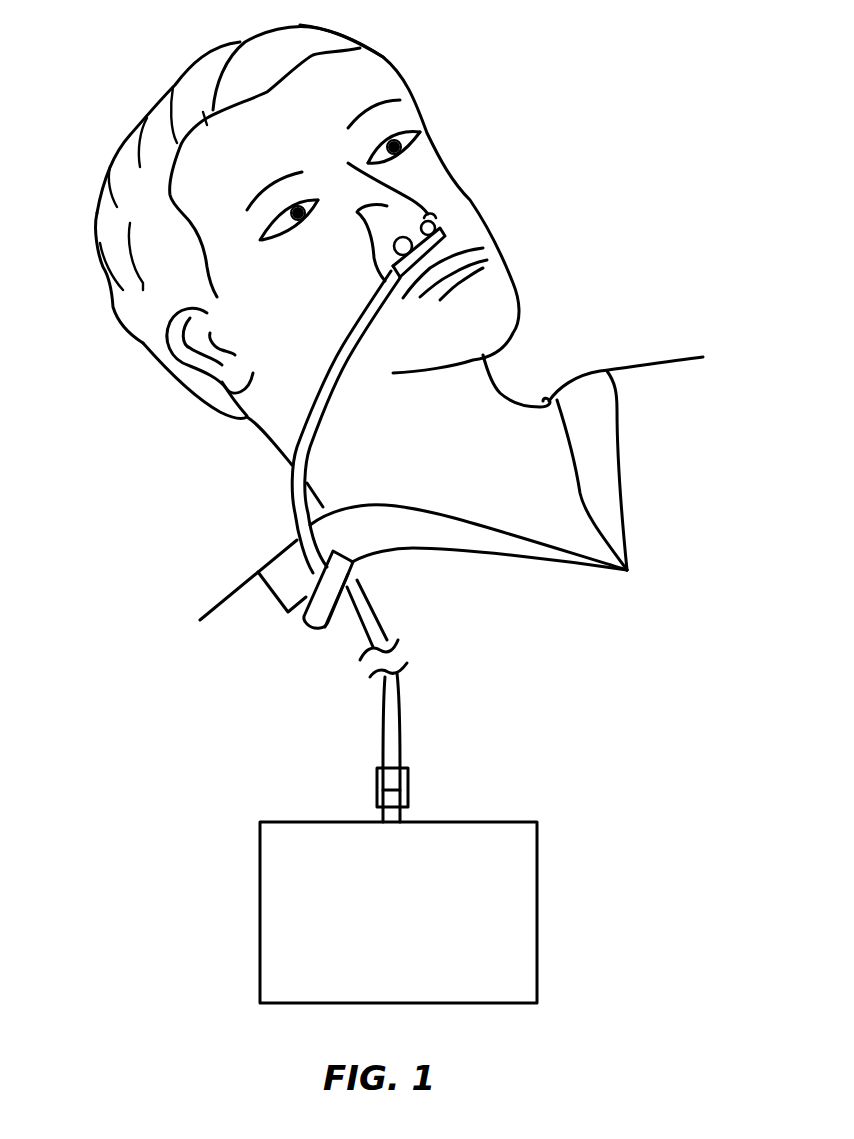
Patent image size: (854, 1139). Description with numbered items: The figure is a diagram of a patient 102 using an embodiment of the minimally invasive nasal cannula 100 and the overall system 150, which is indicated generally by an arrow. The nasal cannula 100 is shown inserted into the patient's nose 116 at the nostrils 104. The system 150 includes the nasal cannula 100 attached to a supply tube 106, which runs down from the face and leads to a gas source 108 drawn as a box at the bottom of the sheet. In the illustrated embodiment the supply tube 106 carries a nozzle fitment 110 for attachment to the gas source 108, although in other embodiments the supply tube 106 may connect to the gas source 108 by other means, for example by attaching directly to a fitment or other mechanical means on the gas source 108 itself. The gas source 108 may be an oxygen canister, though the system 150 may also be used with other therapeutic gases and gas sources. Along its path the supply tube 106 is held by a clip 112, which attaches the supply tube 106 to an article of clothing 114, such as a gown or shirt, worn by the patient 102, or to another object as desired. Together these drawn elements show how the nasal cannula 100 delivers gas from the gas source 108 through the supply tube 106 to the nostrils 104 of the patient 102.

The nasal cannula 100 is at (440, 233).
The patient 102 is at (360, 87).
The nostrils 104 is at (433, 214).
The supply tube 106 is at (312, 418).
The gas source 108 is at (488, 902).
The nozzle fitment 110 is at (408, 797).
The clip 112 is at (330, 583).
The article of clothing 114 is at (283, 583).
The nose 116 is at (360, 217).
The system 150 is at (220, 534).